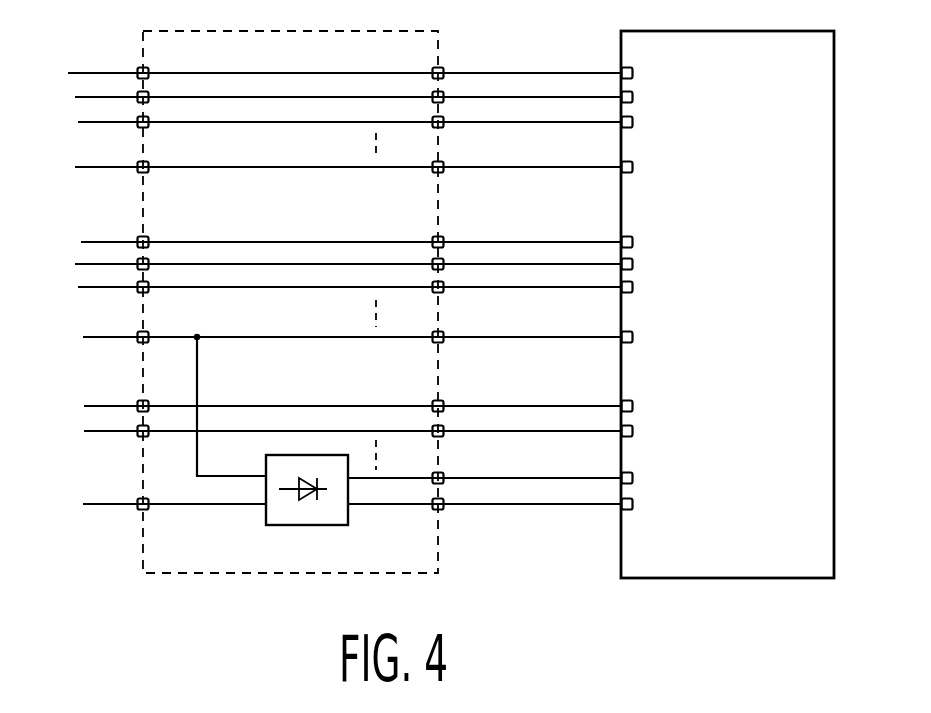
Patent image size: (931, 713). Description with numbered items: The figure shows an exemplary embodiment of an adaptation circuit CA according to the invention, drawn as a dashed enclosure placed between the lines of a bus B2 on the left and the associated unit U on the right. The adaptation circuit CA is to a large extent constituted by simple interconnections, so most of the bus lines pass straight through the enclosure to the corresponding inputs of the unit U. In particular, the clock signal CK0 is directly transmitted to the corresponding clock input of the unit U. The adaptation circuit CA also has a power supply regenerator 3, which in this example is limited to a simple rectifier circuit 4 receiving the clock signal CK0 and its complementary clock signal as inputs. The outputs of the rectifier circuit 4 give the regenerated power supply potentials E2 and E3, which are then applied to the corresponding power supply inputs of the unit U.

The bus B2 is at (101, 68).
The clock signal CK0 is at (120, 338).
The power supply regenerator 3 is at (251, 521).
The rectifier circuit 4 is at (330, 525).
The regenerated power supply potential E3 is at (562, 476).
The regenerated power supply potential E2 is at (558, 508).
The adaptation circuit CA is at (150, 575).
The unit U is at (768, 580).